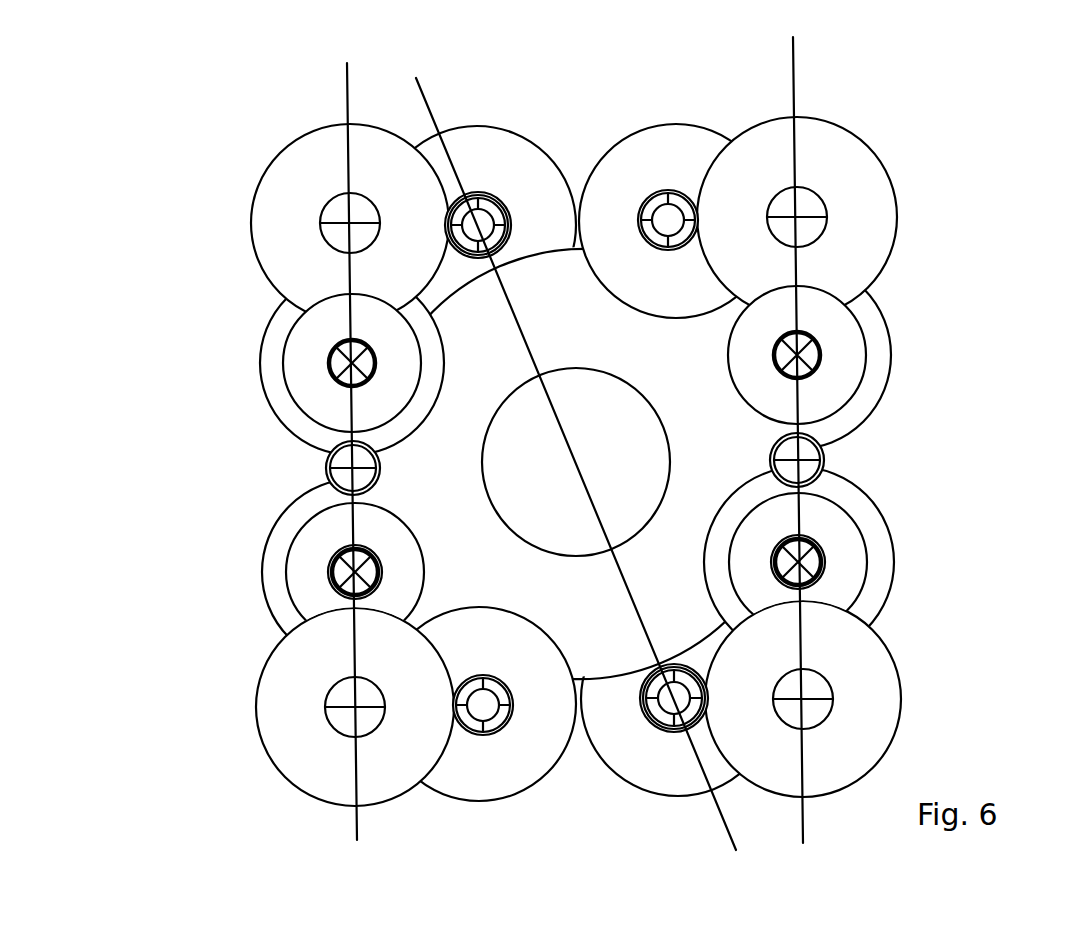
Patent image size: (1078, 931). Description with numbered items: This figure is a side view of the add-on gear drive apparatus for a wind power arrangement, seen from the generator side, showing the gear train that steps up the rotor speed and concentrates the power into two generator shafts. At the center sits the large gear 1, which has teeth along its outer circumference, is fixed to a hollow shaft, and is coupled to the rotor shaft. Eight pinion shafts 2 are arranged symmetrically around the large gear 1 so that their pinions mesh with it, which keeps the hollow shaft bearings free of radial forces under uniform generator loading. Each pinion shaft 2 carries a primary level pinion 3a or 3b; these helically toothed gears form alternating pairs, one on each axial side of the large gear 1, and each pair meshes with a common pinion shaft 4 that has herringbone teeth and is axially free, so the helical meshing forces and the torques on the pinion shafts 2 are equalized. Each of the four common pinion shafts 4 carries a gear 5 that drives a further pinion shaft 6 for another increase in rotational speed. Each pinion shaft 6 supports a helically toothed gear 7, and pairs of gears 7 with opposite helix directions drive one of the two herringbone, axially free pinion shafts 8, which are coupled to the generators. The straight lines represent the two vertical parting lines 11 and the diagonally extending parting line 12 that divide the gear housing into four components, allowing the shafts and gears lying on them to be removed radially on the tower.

The large gear 1 is at (695, 401).
The pinion shaft 2 is at (487, 203).
The primary level pinion 3a is at (478, 145).
The primary level pinion 3b is at (640, 145).
The common pinion shaft 4 is at (338, 213).
The gear 5 is at (283, 190).
The further pinion shaft 6 is at (337, 362).
The gear 7 is at (305, 372).
The pinion shaft 8 is at (345, 462).
The parting line 11 is at (347, 80).
The diagonally extending parting line 12 is at (420, 88).